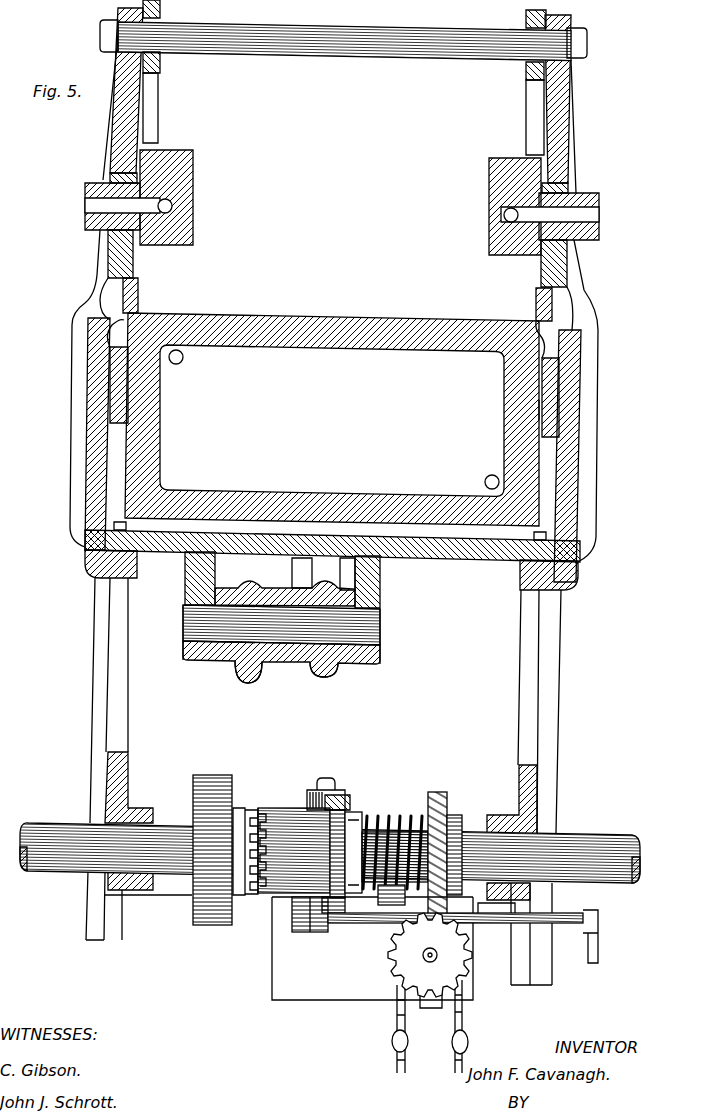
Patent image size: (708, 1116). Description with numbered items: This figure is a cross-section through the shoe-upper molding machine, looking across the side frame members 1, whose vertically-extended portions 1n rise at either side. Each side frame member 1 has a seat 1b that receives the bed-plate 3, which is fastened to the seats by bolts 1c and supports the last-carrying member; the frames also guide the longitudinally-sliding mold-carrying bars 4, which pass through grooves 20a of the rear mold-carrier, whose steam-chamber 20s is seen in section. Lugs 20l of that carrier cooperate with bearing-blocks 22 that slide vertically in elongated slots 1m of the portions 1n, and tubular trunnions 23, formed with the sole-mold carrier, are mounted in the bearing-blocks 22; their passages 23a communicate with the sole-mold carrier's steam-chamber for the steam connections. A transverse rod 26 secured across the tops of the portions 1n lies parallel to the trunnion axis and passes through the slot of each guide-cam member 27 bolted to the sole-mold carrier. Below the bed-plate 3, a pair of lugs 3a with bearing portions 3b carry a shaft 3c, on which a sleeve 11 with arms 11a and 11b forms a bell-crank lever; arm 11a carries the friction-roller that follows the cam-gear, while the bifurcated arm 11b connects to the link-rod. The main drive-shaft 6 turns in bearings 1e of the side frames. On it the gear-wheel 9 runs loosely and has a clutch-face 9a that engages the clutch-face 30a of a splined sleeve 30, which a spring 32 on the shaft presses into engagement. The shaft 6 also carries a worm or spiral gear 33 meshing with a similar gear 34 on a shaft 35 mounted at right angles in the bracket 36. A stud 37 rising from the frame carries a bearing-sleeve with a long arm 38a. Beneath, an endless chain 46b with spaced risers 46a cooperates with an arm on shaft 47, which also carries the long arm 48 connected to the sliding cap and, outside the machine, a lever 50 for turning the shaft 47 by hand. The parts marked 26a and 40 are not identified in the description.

The side frame members 1 is at (96, 650).
The seats 1b is at (135, 566).
The bolts 1c is at (114, 527).
The bearings 1e is at (137, 808).
The elongated slots 1m is at (100, 302).
The vertically-extended portions 1n is at (120, 128).
The bed-plate 3 is at (455, 550).
The lugs 3a is at (192, 582).
The bearing portions 3b is at (382, 658).
The shaft 3c is at (381, 623).
The mold-carrying bars 4 is at (118, 381).
The main drive-shaft 6 is at (53, 828).
The gear-wheel 9 is at (207, 788).
The clutch-face 9a is at (238, 812).
The sleeve 11 is at (290, 661).
The arm 11a is at (250, 681).
The arm 11b is at (318, 570).
The grooves 20a is at (130, 403).
The lugs 20l is at (137, 293).
The steam-chamber 20s is at (334, 419).
The bearing-blocks 22 is at (108, 254).
The trunnions 23 is at (88, 190).
The passages 23a is at (193, 203).
The transverse rod 26 is at (397, 48).
The frame member side bar 26a is at (539, 412).
The guide-cam member 27 is at (152, 108).
The sleeve 30 is at (294, 850).
The clutch-face 30a is at (263, 815).
The spring 32 is at (395, 822).
The worm or spiral gear 33 is at (438, 793).
The gear 34 is at (408, 962).
The shaft 35 is at (437, 948).
The bracket 36 is at (440, 1012).
The stud 37 is at (324, 779).
The long arm 38a is at (348, 795).
The bracket 40 is at (283, 980).
The risers 46a is at (392, 1042).
The endless chain 46b is at (453, 1047).
The shaft 47 is at (380, 915).
The long arm 48 is at (400, 908).
The lever 50 is at (598, 952).